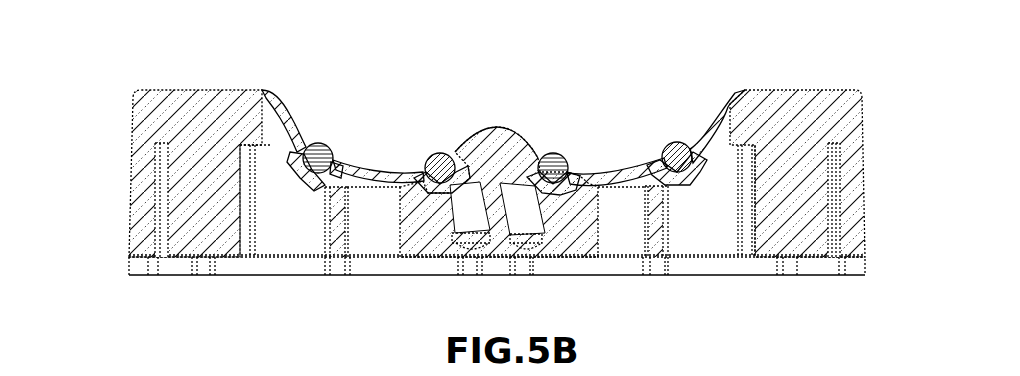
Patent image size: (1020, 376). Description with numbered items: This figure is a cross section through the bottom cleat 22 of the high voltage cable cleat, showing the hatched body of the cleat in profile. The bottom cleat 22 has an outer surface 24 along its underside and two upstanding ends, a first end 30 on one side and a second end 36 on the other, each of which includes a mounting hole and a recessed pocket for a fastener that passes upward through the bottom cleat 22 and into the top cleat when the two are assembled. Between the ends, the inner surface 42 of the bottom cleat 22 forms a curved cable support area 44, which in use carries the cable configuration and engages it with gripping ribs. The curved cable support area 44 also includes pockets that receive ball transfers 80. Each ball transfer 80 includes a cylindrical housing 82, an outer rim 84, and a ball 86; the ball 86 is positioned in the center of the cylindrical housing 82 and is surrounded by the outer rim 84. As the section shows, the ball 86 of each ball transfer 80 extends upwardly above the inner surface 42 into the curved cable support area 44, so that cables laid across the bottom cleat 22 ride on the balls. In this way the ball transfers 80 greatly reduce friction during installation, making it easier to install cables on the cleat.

The bottom cleat 22 is at (130, 182).
The outer surface 24 is at (170, 277).
The first end 30 is at (147, 92).
The second end 36 is at (788, 91).
The inner surface 42 is at (265, 108).
The curved cable support area 44 is at (603, 170).
The ball transfer 80 is at (303, 147).
The cylindrical housing 82 is at (307, 170).
The outer rim 84 is at (343, 160).
The ball 86 is at (328, 152).